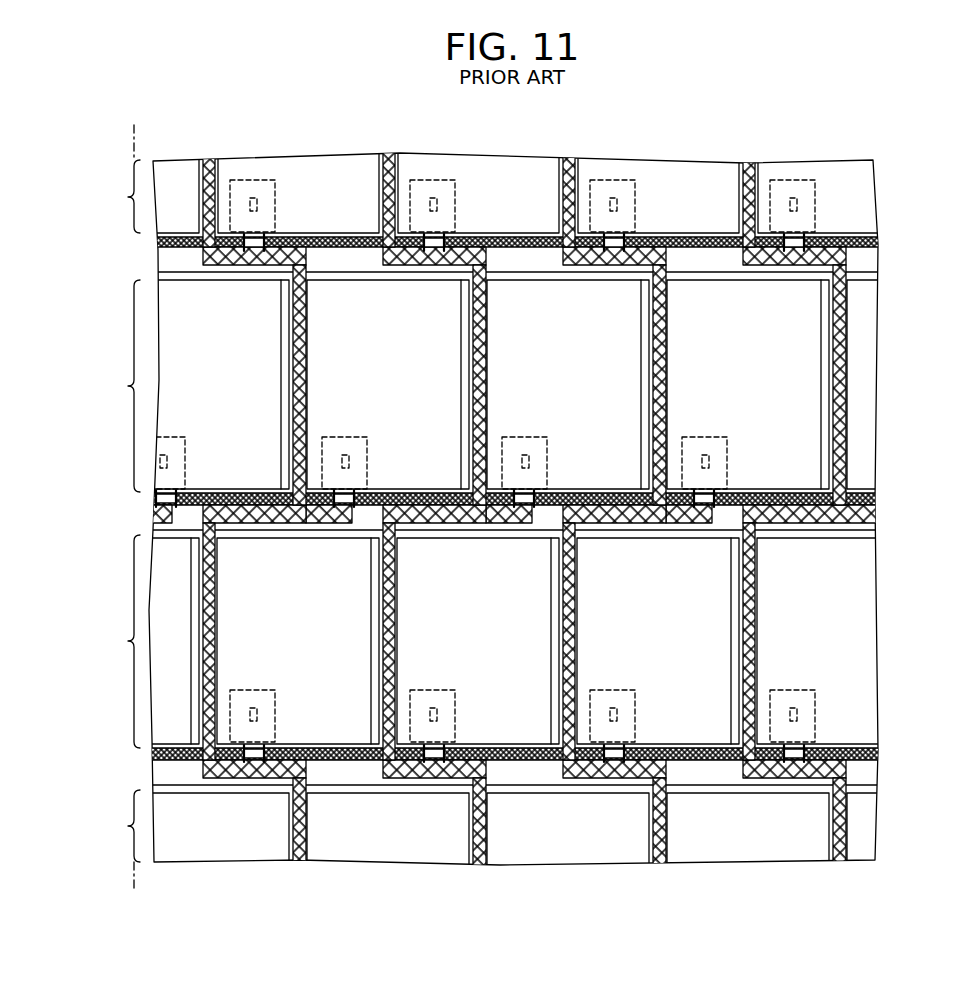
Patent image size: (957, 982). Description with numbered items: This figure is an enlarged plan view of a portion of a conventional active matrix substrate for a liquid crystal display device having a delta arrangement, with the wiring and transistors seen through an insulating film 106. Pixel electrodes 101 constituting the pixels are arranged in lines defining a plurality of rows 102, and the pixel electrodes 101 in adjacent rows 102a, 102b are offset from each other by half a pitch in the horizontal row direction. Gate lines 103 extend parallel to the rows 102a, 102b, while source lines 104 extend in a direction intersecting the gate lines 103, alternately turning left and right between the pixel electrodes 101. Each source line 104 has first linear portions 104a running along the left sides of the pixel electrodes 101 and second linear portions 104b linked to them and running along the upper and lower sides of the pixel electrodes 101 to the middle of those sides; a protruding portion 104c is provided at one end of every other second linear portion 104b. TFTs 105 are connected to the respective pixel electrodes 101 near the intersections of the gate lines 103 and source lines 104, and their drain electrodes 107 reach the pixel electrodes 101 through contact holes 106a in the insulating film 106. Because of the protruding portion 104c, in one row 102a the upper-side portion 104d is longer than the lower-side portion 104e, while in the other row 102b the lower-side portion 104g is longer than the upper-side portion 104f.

The pixel electrode 101 is at (300, 158).
The row 102 is at (98, 506).
The one row 102a is at (102, 454).
The other row 102b is at (102, 571).
The gate line 103 is at (878, 241).
The source line 104 is at (209, 158).
The first linear portion 104a is at (890, 386).
The second linear portion 104b is at (437, 266).
The protruding portion 104c is at (307, 531).
The portion extending along the upper side 104d is at (352, 571).
The portion extending along the lower side 104e is at (524, 806).
The portion extending along the upper edge side 104f is at (524, 291).
The portion extending along the lower side 104g is at (483, 571).
The TFT 105 is at (269, 238).
The insulating film 106 is at (870, 530).
The contact hole 106a is at (349, 455).
The drain electrode 107 is at (343, 437).